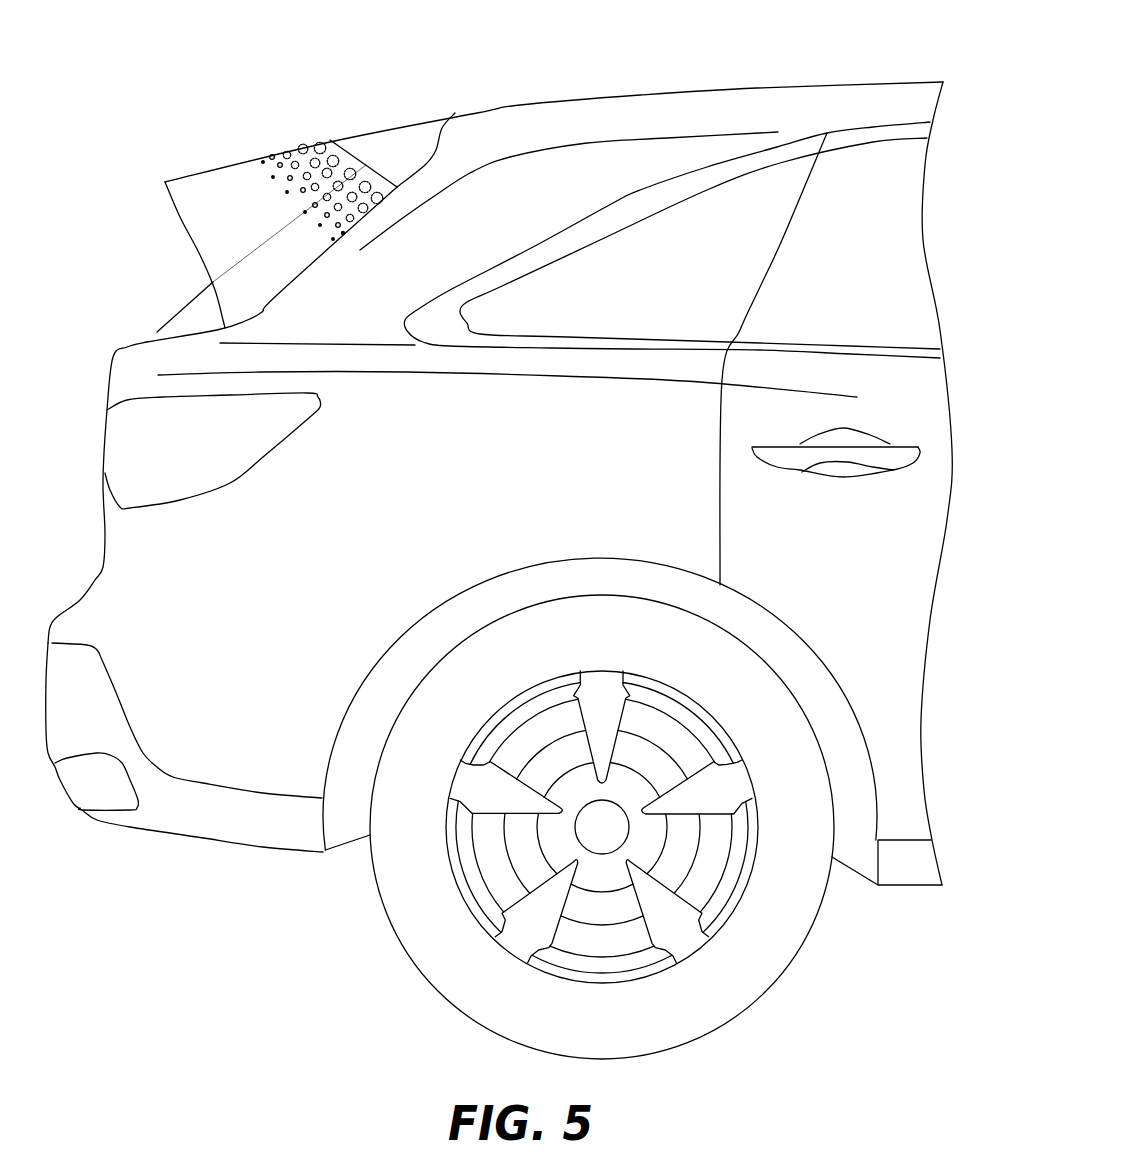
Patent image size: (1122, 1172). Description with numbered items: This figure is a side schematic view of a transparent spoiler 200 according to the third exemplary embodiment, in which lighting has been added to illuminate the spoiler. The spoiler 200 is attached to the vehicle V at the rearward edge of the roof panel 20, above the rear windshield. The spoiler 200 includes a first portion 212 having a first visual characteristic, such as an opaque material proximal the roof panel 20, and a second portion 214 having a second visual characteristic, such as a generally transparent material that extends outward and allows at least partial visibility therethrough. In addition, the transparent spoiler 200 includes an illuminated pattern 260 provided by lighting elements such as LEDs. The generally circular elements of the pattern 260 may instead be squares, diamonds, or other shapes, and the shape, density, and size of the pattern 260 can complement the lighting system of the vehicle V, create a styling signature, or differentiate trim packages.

The vehicle V is at (683, 91).
The roof panel 20 is at (520, 105).
The first portion 212 is at (400, 147).
The spoiler 200 is at (315, 115).
The illuminated pattern 260 is at (290, 143).
The second portion 214 is at (223, 193).